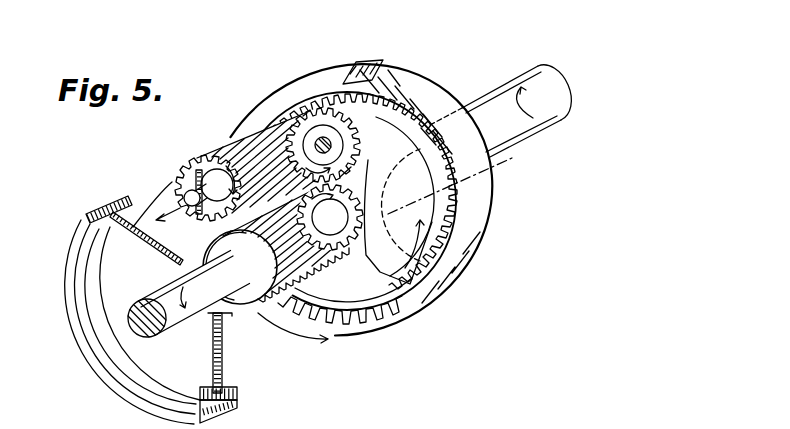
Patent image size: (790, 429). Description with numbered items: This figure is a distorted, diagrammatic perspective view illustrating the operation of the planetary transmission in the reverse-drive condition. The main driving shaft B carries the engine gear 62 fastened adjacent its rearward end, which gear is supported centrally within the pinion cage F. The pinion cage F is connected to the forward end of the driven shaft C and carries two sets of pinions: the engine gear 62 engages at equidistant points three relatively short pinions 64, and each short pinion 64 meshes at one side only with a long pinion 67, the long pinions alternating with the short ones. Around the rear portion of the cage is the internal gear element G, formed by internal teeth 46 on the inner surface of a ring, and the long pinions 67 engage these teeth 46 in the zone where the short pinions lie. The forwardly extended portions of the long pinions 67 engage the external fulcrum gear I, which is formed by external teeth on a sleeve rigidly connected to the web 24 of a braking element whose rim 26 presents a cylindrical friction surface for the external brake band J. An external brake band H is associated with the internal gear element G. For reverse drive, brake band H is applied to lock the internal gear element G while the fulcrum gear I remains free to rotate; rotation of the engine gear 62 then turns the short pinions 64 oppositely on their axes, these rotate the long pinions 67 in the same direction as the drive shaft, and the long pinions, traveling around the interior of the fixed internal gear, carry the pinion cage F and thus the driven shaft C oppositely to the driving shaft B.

The short pinion 64 is at (267, 128).
The external brake band H is at (358, 62).
The internal gear element G is at (419, 84).
The driven shaft C is at (553, 88).
The long pinion 67 is at (208, 157).
The pinion cage F is at (158, 197).
The external brake band J is at (80, 236).
The rim 26 is at (80, 283).
The web 24 is at (146, 269).
The main driving shaft B is at (152, 335).
The external gear element I is at (287, 305).
The engine gear 62 is at (347, 238).
The internal teeth 46 is at (338, 323).